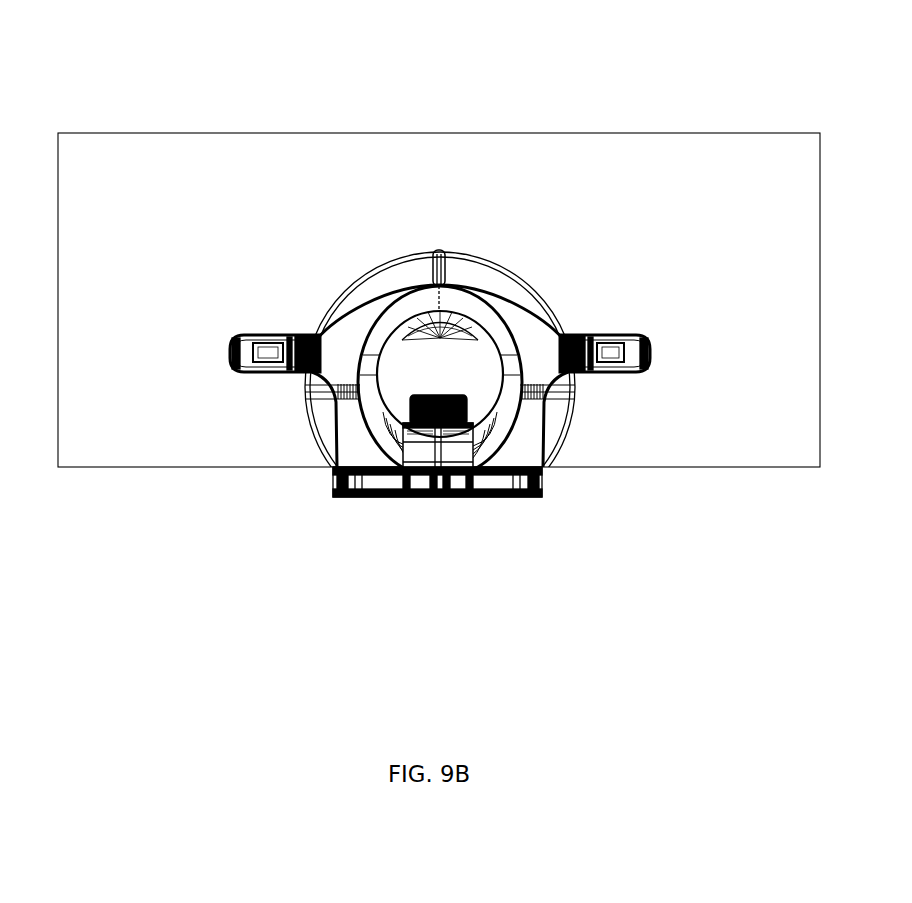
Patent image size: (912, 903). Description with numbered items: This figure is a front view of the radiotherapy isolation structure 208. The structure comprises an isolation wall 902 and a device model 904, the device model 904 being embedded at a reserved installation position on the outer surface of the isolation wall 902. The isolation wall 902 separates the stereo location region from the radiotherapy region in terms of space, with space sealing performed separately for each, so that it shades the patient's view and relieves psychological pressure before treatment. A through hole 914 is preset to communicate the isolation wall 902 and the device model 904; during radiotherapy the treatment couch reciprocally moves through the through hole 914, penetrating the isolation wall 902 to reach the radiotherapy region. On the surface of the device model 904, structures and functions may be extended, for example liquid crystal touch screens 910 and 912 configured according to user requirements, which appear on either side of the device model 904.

The radiotherapy isolation structure 208 is at (128, 90).
The isolation wall 902 is at (570, 212).
The device model 904 is at (347, 355).
The liquid crystal touch screen 910 is at (647, 370).
The liquid crystal touch screen 912 is at (240, 335).
The through hole 914 is at (430, 367).